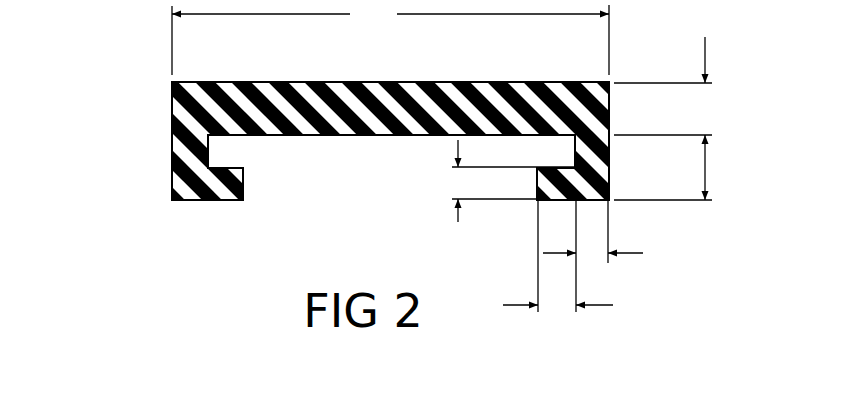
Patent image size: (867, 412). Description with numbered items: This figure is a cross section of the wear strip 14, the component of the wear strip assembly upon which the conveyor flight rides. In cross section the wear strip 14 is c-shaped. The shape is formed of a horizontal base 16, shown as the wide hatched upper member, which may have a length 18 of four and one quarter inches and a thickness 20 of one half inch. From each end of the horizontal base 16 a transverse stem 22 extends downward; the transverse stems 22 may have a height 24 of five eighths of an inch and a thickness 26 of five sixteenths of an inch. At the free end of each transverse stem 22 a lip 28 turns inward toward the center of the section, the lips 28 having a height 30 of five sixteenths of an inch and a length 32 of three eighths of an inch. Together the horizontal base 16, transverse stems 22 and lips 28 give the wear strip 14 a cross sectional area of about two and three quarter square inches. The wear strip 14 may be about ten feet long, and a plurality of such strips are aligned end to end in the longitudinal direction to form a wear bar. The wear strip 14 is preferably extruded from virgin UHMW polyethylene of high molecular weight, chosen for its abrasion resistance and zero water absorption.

The wear strip 14 is at (128, 75).
The horizontal base 16 is at (410, 90).
The length of horizontal base 18 is at (390, 38).
The thickness of horizontal base 20 is at (666, 86).
The transverse stems 22 is at (181, 148).
The height of transverse stems 24 is at (712, 170).
The thickness of transverse stems 26 is at (593, 256).
The lips 28 is at (237, 177).
The height of lips 30 is at (507, 181).
The length of lips 32 is at (556, 303).